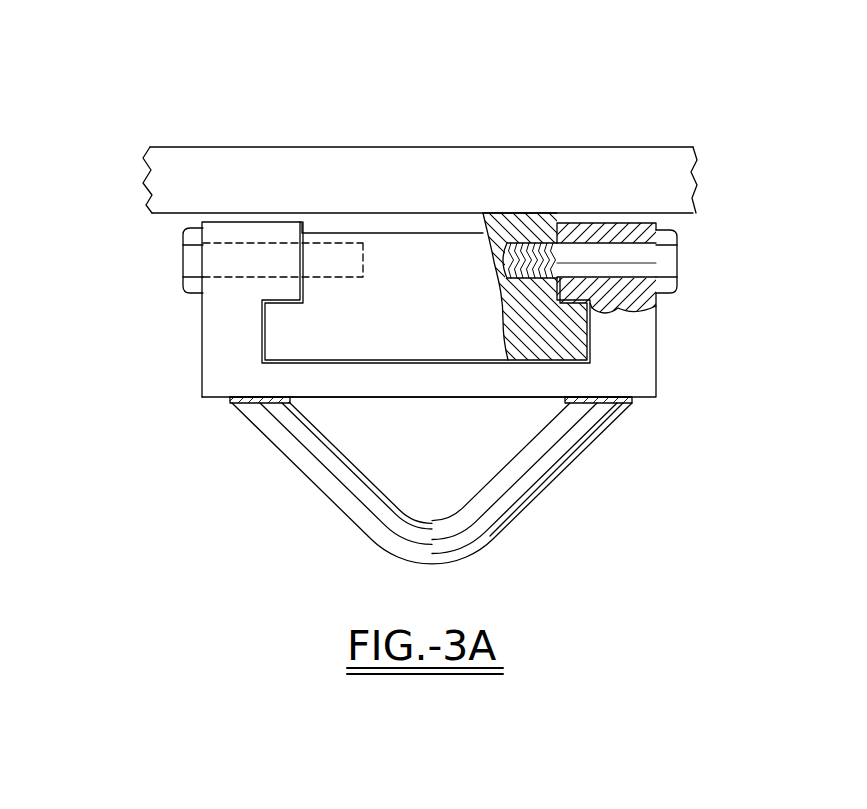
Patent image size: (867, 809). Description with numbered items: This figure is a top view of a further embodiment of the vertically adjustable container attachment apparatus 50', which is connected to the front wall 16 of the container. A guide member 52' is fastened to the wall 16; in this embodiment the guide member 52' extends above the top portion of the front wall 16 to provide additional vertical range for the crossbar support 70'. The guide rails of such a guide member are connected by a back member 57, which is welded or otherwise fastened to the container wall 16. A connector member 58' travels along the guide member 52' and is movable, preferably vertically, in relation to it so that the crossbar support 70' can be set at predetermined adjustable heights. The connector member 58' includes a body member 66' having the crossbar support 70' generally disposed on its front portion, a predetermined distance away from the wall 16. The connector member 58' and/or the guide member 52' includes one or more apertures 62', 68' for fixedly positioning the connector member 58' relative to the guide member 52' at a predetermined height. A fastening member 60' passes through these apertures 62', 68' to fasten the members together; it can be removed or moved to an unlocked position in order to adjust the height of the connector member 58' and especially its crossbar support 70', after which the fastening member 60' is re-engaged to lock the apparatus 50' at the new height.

The front wall 16 is at (329, 160).
The back member 57 is at (385, 224).
The guide member 52' is at (466, 161).
The connector member 58' is at (373, 309).
The fastening member 60' is at (437, 268).
The aperture 62' is at (519, 285).
The body member 66' is at (430, 425).
The aperture 68' is at (606, 281).
The crossbar support 70' is at (433, 480).
The vertically adjustable container attachment apparatus 50' is at (161, 522).